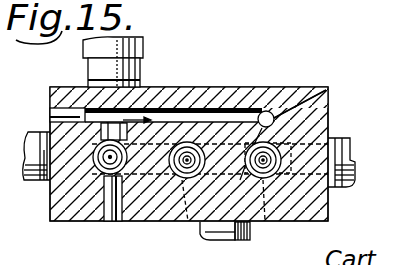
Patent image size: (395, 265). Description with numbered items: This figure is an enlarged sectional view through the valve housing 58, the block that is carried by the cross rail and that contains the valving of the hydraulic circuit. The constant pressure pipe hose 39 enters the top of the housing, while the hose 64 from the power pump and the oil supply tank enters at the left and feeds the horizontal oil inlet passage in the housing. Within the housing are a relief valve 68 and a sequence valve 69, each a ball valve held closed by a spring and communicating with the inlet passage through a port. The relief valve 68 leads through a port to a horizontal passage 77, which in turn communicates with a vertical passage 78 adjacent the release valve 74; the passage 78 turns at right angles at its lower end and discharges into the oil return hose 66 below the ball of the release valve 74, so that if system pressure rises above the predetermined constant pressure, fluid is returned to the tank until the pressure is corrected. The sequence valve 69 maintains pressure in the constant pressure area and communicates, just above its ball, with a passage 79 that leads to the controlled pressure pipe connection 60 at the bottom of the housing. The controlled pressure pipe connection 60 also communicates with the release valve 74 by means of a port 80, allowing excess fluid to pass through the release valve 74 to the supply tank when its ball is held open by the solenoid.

The pipe hose 39 is at (143, 49).
The valve housing 58 is at (309, 89).
The controlled pressure pipe connection 60 is at (227, 242).
The hose 64 is at (37, 182).
The hose 66 is at (352, 140).
The relief valve 68 is at (100, 187).
The sequence valve 69 is at (172, 190).
The release valve 74 is at (327, 124).
The horizontal passage 77 is at (206, 108).
The vertical passage 78 is at (266, 111).
The passage 79 is at (187, 224).
The port 80 is at (264, 223).